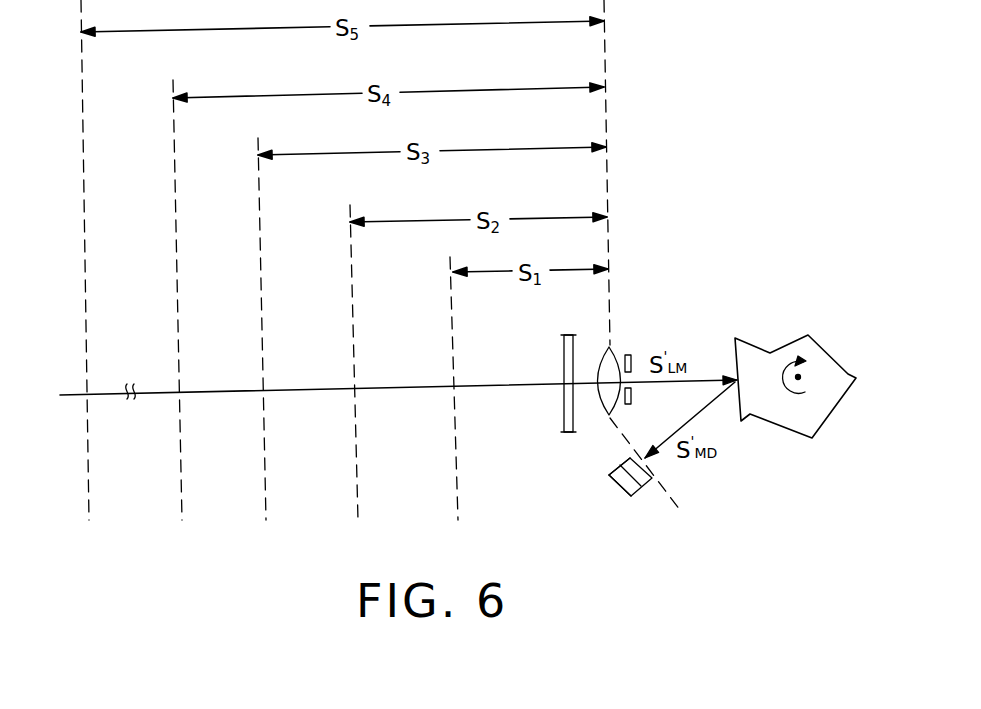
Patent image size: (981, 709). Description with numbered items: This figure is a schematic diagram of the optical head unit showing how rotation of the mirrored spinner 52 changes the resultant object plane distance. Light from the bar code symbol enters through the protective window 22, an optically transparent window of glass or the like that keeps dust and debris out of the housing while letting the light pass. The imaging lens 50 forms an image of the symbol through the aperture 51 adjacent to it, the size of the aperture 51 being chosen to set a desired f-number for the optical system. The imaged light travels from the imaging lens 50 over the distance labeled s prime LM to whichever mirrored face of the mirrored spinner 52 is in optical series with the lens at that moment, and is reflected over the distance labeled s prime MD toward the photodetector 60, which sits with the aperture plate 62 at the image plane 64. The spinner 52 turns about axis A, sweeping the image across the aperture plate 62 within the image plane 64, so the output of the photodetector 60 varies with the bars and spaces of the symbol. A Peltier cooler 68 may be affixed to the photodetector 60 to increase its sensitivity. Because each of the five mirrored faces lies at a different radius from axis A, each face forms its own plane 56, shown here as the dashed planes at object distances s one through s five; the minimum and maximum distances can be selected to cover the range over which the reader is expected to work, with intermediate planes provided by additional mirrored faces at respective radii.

The protective window 22 is at (564, 346).
The imaging lens 50 is at (615, 348).
The aperture 51 is at (637, 372).
The mirrored spinner 52 is at (856, 368).
The image planes (object planes) 56 is at (89, 487).
The photodetector 60 is at (640, 488).
The aperture plate 62 is at (623, 455).
The image plane 64 is at (678, 510).
The Peltier cooler 68 is at (615, 480).